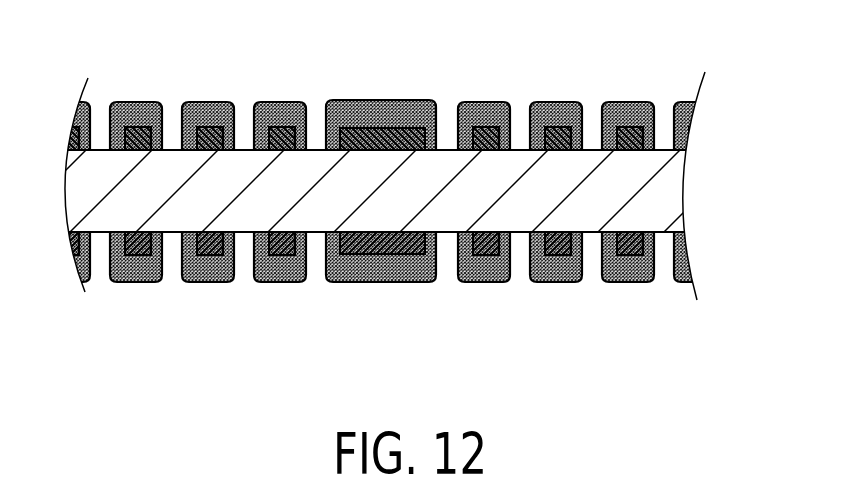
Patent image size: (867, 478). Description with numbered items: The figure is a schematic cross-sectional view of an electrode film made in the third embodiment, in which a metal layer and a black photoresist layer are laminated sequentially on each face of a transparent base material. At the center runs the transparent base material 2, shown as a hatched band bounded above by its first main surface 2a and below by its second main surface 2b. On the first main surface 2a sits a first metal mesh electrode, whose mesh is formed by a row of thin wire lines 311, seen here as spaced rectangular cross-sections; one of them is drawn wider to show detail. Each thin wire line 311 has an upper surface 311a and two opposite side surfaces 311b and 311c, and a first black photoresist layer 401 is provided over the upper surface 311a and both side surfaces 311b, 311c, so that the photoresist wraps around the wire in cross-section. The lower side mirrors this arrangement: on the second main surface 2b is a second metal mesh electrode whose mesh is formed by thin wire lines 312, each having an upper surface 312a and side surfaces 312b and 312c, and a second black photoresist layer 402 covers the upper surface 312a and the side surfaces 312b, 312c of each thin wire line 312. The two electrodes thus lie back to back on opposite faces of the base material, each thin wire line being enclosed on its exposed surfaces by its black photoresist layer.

The transparent base material 2 is at (375, 201).
The first main surface 2a is at (174, 150).
The second main surface 2b is at (175, 232).
The thin wire line 311 is at (382, 85).
The upper surface 311a is at (382, 90).
The side surface 311b is at (327, 130).
The side surface 311c is at (437, 130).
The thin wire line 312 is at (382, 314).
The upper surface 312a is at (380, 301).
The side surface 312b is at (327, 252).
The side surface 312c is at (438, 252).
The first black photoresist layer 401 is at (382, 85).
The second black photoresist layer 402 is at (380, 314).